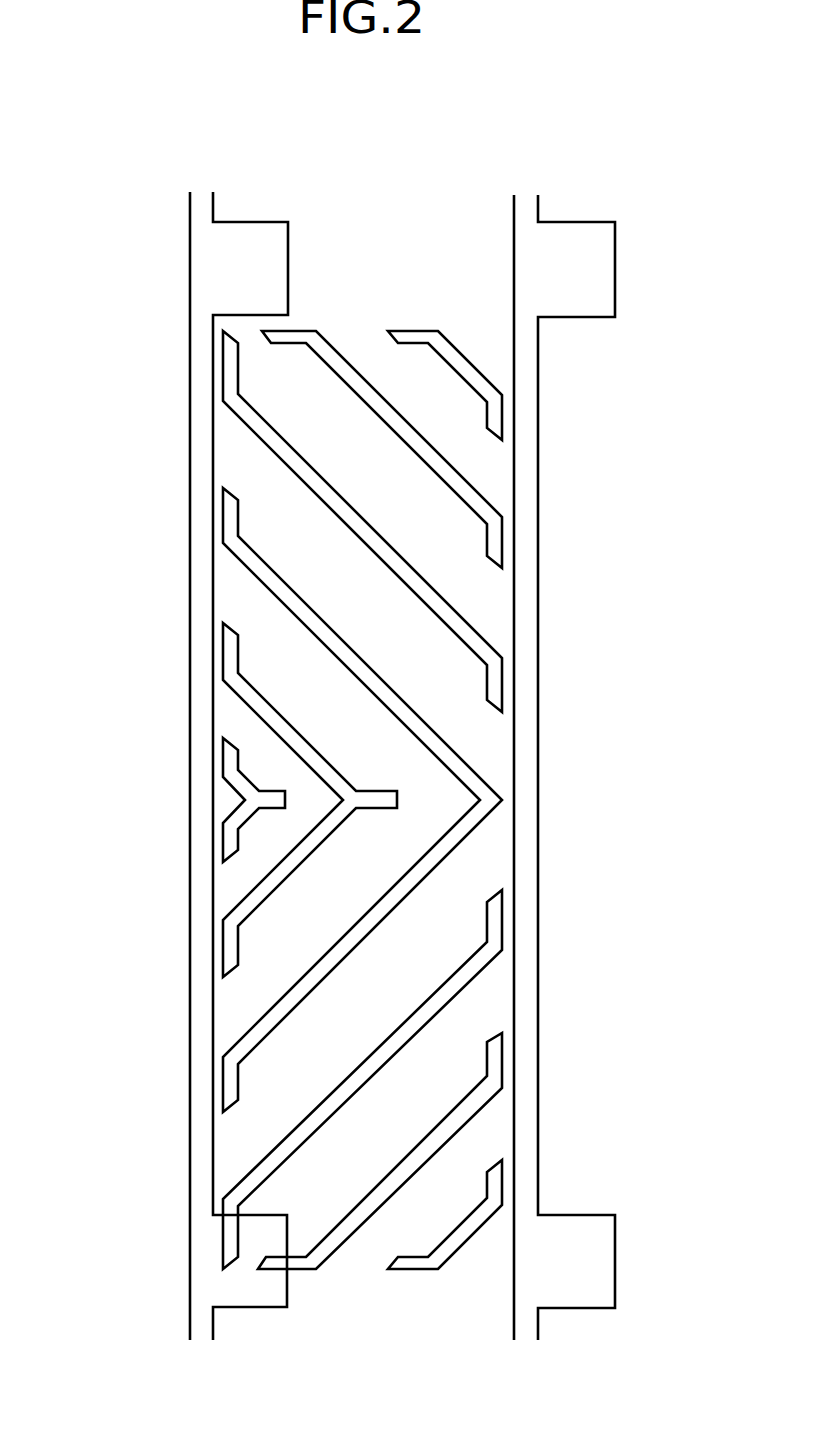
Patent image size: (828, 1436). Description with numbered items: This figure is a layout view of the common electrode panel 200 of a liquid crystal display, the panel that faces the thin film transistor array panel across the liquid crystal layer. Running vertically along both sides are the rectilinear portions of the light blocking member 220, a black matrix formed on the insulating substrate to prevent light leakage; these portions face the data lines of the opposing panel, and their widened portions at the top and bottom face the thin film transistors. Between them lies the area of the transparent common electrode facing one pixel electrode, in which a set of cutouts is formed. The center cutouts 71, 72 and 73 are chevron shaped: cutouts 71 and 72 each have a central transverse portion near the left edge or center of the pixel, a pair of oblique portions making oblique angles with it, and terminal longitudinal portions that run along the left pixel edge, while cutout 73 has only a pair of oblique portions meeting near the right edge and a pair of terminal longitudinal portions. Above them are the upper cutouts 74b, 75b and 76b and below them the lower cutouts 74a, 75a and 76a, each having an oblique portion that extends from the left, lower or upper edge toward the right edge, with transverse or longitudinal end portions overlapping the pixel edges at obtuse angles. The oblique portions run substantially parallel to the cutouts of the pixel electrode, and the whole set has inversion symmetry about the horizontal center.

The common electrode panel 200 is at (385, 150).
The light blocking member 220 is at (503, 248).
The center cutout 71 is at (211, 835).
The center cutout 72 is at (259, 725).
The center cutout 73 is at (263, 597).
The lower cutout 74a is at (455, 1012).
The upper cutout 74b is at (469, 605).
The lower cutout 75a is at (455, 1147).
The upper cutout 75b is at (462, 457).
The lower cutout 76a is at (410, 1283).
The upper cutout 76b is at (489, 362).